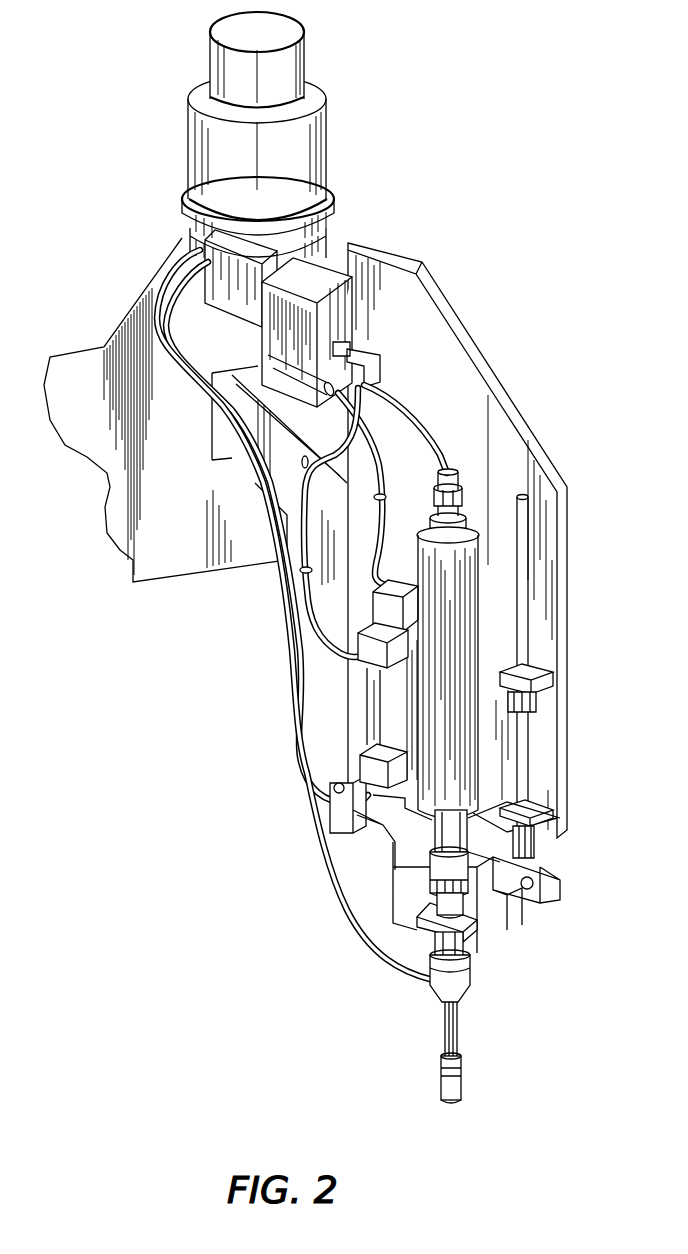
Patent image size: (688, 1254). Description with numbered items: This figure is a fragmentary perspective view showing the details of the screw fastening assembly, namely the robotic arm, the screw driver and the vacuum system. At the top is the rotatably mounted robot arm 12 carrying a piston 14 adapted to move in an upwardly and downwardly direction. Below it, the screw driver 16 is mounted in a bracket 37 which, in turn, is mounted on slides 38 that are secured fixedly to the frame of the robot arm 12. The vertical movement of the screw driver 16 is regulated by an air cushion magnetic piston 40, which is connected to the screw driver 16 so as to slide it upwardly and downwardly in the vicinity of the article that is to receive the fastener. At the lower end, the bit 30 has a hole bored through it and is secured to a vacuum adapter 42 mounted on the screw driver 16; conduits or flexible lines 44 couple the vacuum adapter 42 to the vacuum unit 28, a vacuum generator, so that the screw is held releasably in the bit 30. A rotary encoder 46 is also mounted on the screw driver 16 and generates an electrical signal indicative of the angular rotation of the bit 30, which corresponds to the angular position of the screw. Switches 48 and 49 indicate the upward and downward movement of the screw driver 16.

The arm 12 is at (563, 805).
The piston 14 is at (363, 103).
The screw driver 16 is at (493, 597).
The vacuum unit 28 is at (330, 288).
The bit 30 is at (465, 1090).
The bracket 37 is at (490, 927).
The slides 38 is at (524, 762).
The air cushion magnetic piston 40 is at (393, 700).
The vacuum adapter 42 is at (470, 975).
The flexible lines 44 is at (314, 808).
The rotary encoder 46 is at (447, 868).
The switch 48 is at (362, 752).
The switch 49 is at (362, 643).